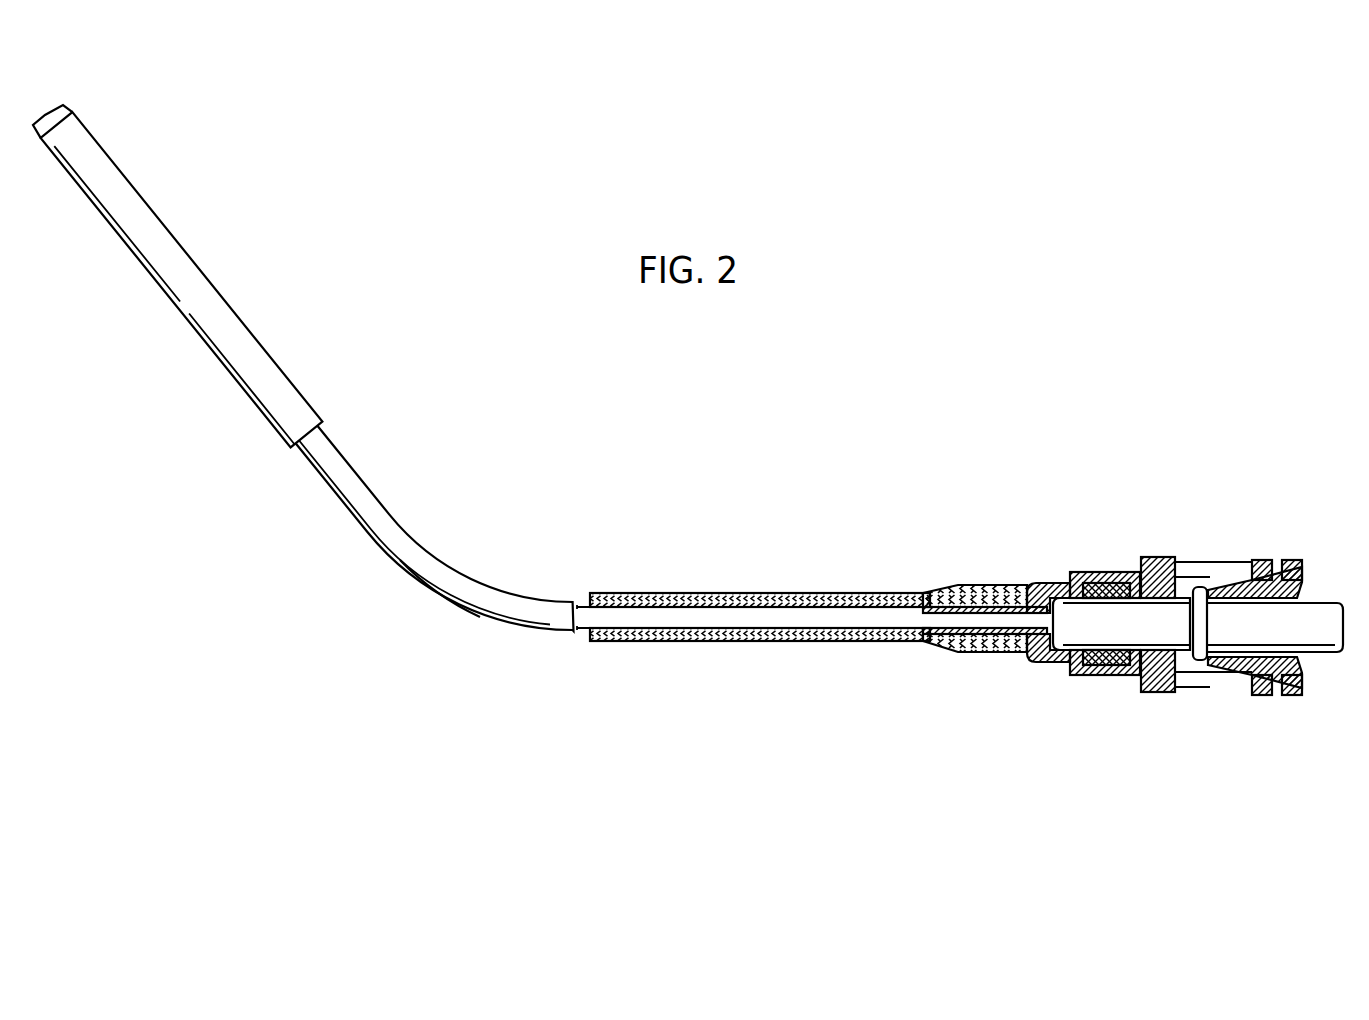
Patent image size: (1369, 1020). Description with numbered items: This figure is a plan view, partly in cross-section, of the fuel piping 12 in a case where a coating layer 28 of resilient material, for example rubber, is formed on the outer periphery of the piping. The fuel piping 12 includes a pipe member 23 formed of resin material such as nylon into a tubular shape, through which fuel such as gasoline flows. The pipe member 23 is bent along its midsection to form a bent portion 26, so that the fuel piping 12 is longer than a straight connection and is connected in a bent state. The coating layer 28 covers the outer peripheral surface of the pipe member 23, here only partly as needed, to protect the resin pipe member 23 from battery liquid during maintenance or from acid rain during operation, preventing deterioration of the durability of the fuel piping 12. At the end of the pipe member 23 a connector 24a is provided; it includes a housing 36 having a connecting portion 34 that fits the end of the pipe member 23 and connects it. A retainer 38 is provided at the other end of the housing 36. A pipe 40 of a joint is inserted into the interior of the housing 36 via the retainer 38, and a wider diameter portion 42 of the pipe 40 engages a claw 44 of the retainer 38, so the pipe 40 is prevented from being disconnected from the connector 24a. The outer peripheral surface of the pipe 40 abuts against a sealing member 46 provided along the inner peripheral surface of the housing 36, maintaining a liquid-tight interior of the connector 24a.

The fuel piping 12 is at (391, 507).
The pipe member 23 is at (355, 508).
The bent portion 26 is at (474, 604).
The coating layer 28 is at (236, 328).
The connecting portion 34 is at (982, 591).
The housing 36 is at (1037, 664).
The sealing member 46 is at (1112, 656).
The connector 24a is at (1163, 555).
The claw 44 is at (1210, 588).
The wider diameter portion 42 is at (1198, 662).
The pipe 40 is at (1320, 640).
The retainer 38 is at (1303, 563).